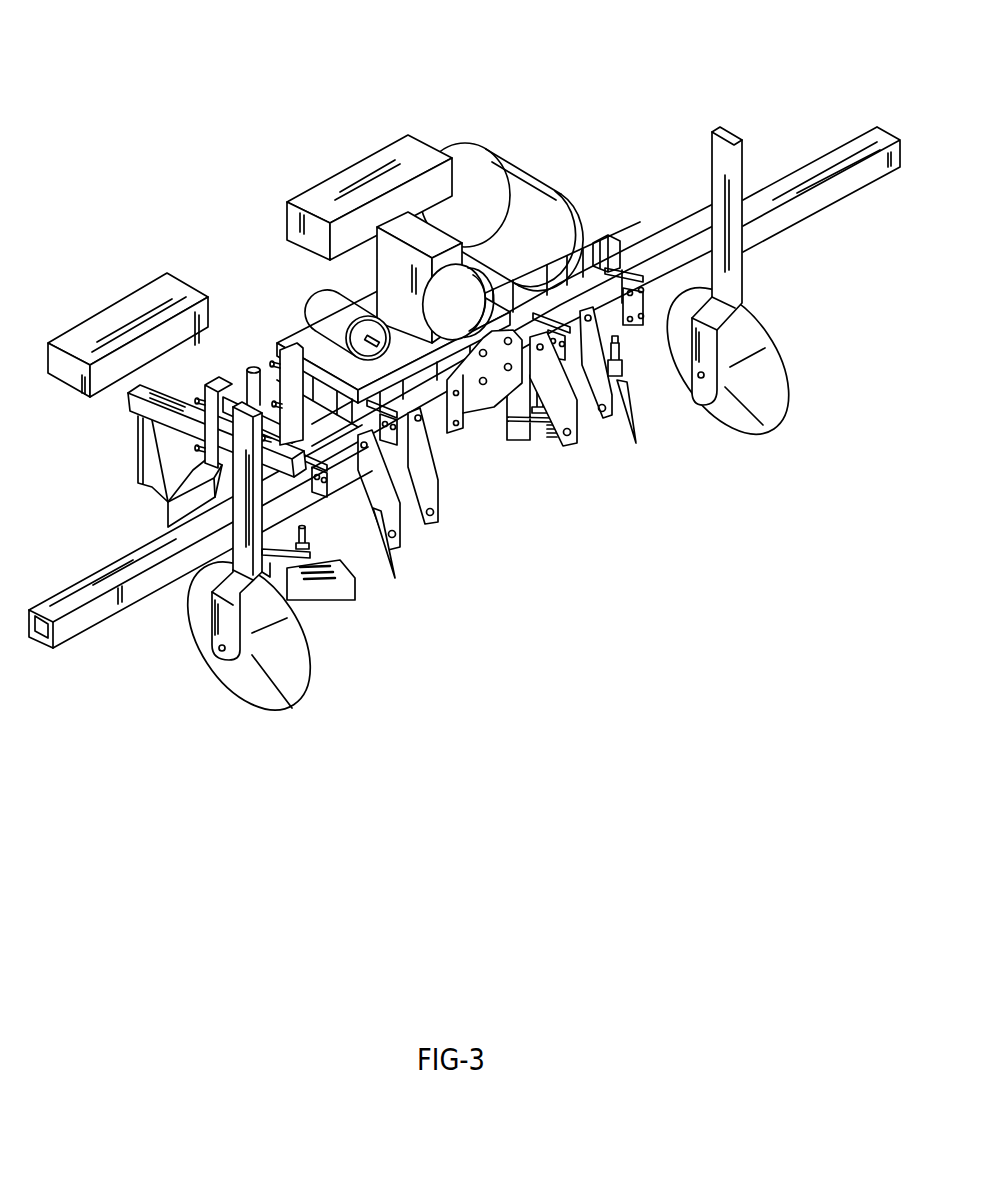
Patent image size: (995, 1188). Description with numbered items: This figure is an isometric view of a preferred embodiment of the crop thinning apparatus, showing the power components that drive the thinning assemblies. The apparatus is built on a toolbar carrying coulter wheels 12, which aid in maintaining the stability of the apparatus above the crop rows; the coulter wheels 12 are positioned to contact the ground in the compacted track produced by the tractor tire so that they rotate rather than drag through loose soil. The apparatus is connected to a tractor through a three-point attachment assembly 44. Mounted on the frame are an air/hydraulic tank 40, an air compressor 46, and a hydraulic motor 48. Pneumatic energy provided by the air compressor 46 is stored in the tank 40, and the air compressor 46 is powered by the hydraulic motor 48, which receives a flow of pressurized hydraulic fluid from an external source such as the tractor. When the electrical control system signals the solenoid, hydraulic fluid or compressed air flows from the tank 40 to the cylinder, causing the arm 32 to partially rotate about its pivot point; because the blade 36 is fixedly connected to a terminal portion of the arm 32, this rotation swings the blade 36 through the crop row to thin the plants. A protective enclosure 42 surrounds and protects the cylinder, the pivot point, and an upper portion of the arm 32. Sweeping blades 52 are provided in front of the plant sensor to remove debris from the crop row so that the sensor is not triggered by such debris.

The coulter wheels 12 is at (242, 687).
The arm 32 is at (140, 437).
The blade 36 is at (157, 498).
The air/hydraulic tank 40 is at (484, 189).
The protective enclosure 42 is at (130, 308).
The three-point attachment assembly 44 is at (432, 487).
The air compressor 46 is at (407, 229).
The hydraulic motor 48 is at (342, 320).
The sweeping blades 52 is at (337, 593).